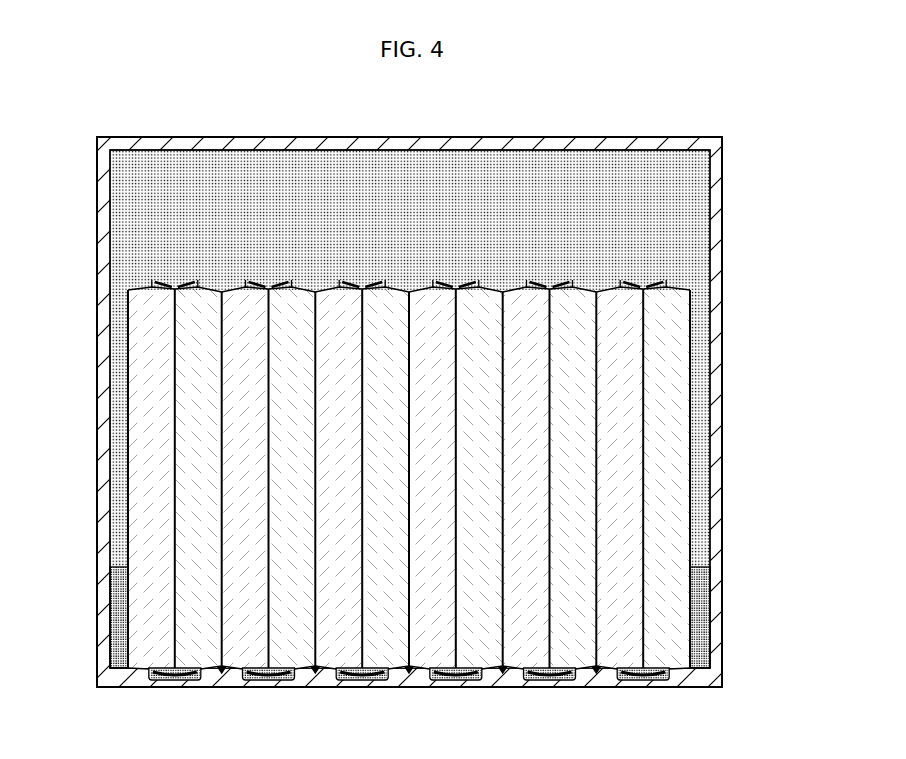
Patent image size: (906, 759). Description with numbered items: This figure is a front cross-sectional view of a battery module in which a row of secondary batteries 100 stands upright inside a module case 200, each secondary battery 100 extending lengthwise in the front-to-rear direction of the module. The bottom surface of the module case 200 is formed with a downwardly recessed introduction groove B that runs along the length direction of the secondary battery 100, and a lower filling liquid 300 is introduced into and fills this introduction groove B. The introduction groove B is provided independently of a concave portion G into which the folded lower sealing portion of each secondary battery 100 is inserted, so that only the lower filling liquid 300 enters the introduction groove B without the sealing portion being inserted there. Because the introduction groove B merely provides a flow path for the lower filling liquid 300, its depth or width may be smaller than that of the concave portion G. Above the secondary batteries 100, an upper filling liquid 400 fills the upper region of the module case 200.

The secondary battery 100 is at (190, 279).
The module case 200 is at (723, 321).
The lower filling liquid 300 is at (122, 601).
The upper filling liquid 400 is at (122, 414).
The introduction groove B is at (222, 670).
The concave portion G is at (268, 677).